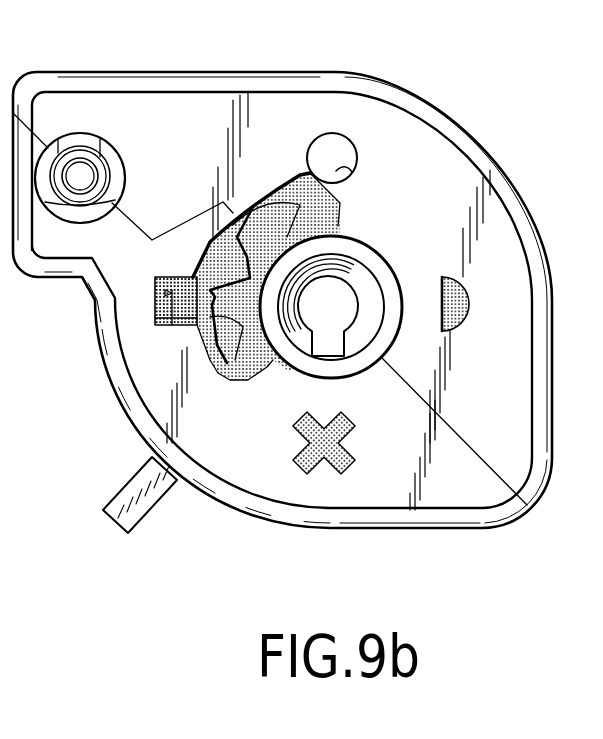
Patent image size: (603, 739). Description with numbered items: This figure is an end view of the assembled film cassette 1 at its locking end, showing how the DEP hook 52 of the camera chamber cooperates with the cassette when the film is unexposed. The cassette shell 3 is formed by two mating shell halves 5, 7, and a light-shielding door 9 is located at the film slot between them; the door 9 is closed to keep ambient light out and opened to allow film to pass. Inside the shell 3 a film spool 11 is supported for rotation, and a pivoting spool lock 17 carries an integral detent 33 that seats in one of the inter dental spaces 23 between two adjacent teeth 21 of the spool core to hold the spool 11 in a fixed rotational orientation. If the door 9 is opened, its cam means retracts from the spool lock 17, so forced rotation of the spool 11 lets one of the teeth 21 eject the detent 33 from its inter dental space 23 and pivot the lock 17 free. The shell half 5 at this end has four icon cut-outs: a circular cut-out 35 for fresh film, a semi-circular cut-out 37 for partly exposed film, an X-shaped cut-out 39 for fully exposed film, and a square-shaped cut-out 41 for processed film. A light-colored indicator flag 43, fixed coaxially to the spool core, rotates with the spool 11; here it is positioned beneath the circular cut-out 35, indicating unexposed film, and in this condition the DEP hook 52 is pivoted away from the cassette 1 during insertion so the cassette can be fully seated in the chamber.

The film cassette 1 is at (100, 0).
The cassette shell 3 is at (518, 158).
The shell half 5 is at (333, 71).
The shell half 7 is at (377, 530).
The light-shielding door 9 is at (105, 147).
The film spool 11 is at (347, 382).
The spool lock 17 is at (157, 318).
The teeth 21 is at (212, 300).
The inter dental spaces 23 is at (205, 352).
The detent 33 is at (210, 251).
The circular cut-out 35 is at (334, 181).
The semi-circular cut-out 37 is at (469, 309).
The X-shaped cut-out 39 is at (348, 451).
The square-shaped cut-out 41 is at (157, 300).
The indicator flag 43 is at (327, 153).
The DEP hook 52 is at (128, 474).